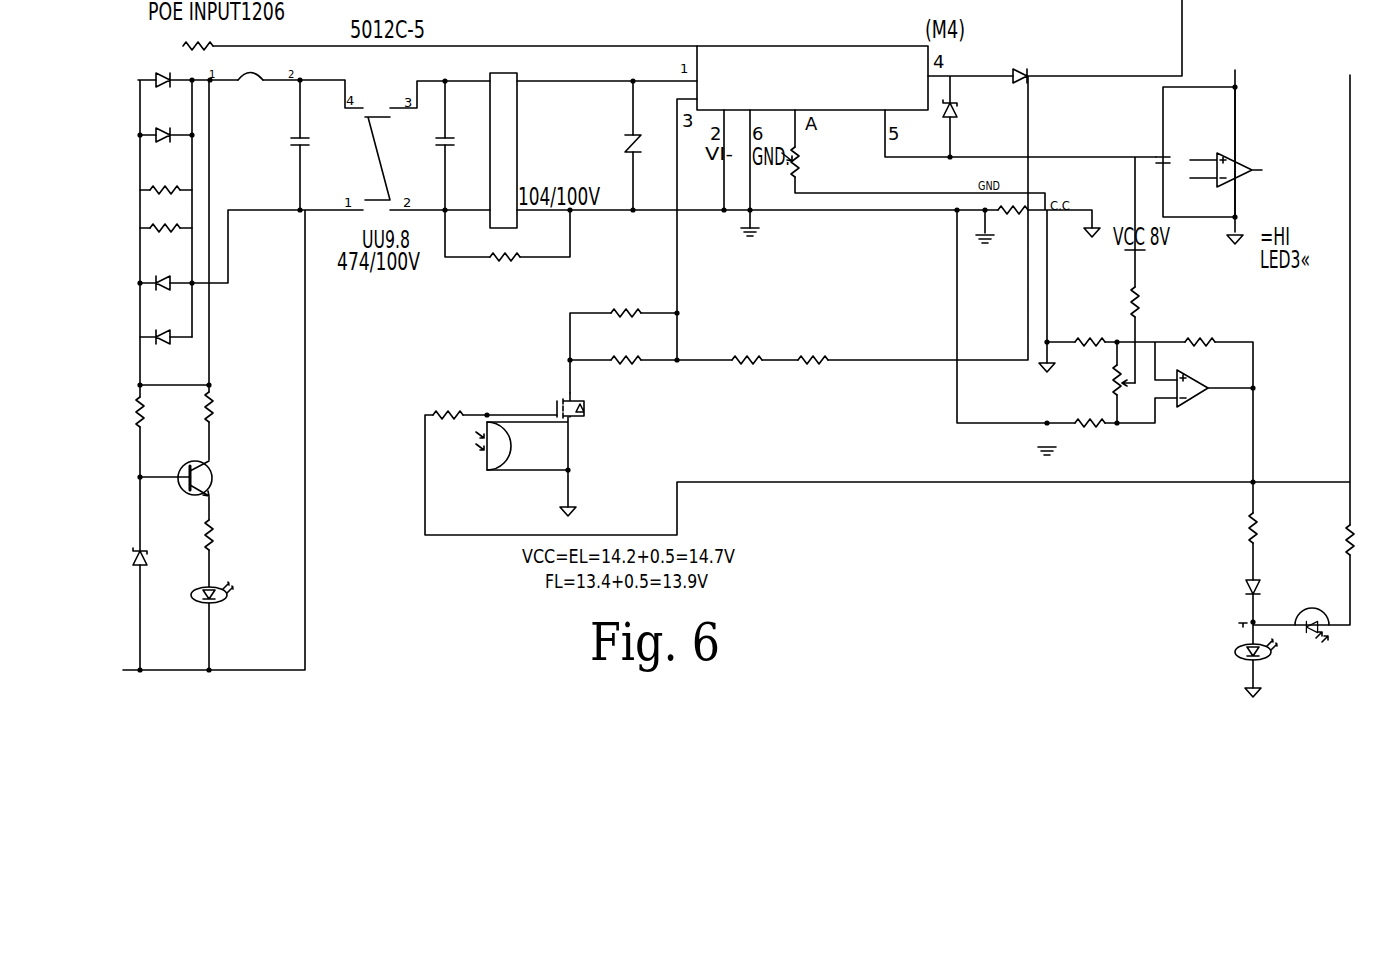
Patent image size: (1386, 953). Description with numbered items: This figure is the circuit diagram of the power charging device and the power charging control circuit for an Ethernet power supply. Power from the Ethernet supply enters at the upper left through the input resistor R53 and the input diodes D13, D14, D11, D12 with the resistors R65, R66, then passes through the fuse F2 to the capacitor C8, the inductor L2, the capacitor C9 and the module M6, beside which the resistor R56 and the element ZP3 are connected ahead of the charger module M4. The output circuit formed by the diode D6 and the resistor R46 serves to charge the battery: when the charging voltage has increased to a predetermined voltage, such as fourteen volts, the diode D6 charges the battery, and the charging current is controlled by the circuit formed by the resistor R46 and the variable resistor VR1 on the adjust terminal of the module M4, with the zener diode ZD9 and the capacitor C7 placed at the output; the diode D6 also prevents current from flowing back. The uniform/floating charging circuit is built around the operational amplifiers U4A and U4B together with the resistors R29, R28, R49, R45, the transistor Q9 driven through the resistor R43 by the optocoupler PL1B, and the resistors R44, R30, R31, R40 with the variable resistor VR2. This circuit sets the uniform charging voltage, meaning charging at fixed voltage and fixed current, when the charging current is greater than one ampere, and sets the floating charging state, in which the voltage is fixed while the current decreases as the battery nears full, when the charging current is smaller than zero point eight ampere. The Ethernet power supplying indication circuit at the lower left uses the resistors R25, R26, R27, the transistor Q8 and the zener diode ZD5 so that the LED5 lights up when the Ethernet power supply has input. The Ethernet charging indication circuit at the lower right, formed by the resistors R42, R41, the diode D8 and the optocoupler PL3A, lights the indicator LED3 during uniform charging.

The input resistor 0R 1206 R53 is at (226, 45).
The diode SS26 D13 is at (166, 81).
The diode SS26 D14 is at (166, 140).
The resistor 0R R65 is at (166, 190).
The resistor 0R R66 is at (166, 231).
The diode SS26 D11 is at (162, 283).
The diode SS26 D12 is at (166, 339).
The fuse 3A F2 is at (250, 82).
The capacitor C8 is at (287, 129).
The inductor UU9.8 474/100V L2 is at (380, 144).
The capacitor C9 is at (454, 129).
The module 5012C-5 M6 is at (515, 122).
The resistor 0R 1206 R56 is at (507, 262).
The varistor 7D101 ZP3 is at (610, 152).
The charger module 5012C-4 M4 is at (812, 81).
The variable resistor VR1 is at (819, 162).
The zener diode 18V ZD9 is at (931, 133).
The diode D6 is at (1028, 74).
The resistor R46 is at (1008, 205).
The capacitor 104 C7 is at (1150, 154).
The operational amplifier section of the uniform/floating charging control circuit U4A is at (1248, 152).
The resistor 33K 1206 R25 is at (160, 429).
The resistor 100R 1206 R26 is at (230, 412).
The transistor 2N5551 Q8 is at (229, 471).
The resistor 2.4K 1206 R27 is at (229, 542).
The zener diode 12V ZD5 is at (162, 570).
The POE power LED LED5 is at (242, 624).
The resistor 100K R43 is at (454, 410).
The optocoupler LTV-357-A PL1B is at (495, 474).
The MOSFET 2N7002 Q9 is at (544, 410).
The resistor 30K R29 is at (628, 311).
The resistor RX R28 is at (628, 363).
The resistor 10.5K R49 is at (753, 362).
The resistor 0R R45 is at (815, 362).
The resistor 220K R44 is at (1155, 301).
The resistor 1K R30 is at (1091, 309).
The potentiometer 50K VR2 is at (1105, 345).
The resistor 1K R31 is at (1093, 423).
The resistor 5.6M R40 is at (1206, 342).
The operational amplifier section of the uniform/floating charging control circuit U4B is at (1206, 389).
The resistor 2.2K R42 is at (1270, 522).
The resistor 1K R41 is at (1333, 526).
The diode CD4148 D8 is at (1220, 587).
The optocoupler LTV-357-A PL3A is at (1333, 638).
The charging LED LED3 is at (1216, 656).